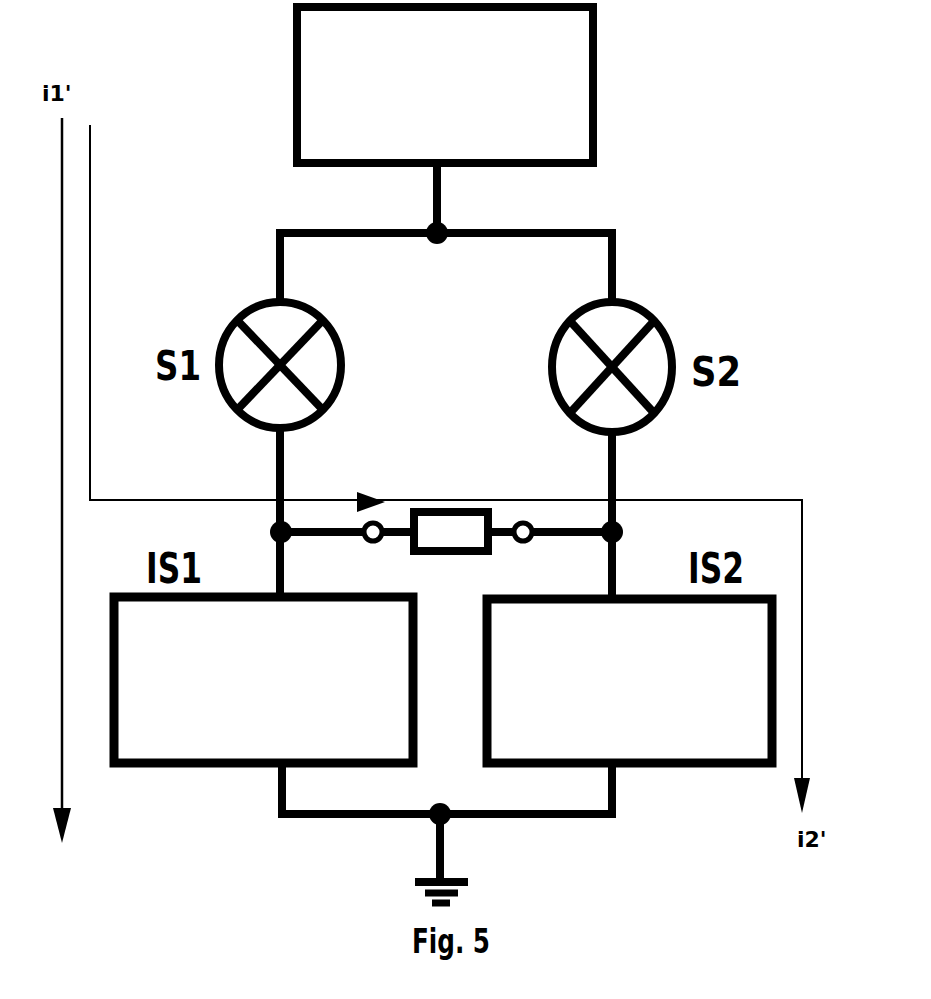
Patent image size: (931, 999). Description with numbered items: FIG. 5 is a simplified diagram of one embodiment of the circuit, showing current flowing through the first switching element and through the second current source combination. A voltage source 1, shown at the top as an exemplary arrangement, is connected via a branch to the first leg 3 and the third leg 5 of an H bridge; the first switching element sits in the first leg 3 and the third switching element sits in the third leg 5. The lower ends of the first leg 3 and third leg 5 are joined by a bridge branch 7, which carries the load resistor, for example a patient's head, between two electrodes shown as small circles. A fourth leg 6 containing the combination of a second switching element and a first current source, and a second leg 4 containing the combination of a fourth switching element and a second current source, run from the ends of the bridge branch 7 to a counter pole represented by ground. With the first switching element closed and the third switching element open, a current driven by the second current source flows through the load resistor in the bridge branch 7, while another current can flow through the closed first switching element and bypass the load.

The voltage source 1 is at (377, 103).
The first leg 3 is at (275, 260).
The second leg 4 is at (615, 585).
The third leg 5 is at (617, 253).
The fourth leg 6 is at (280, 568).
The bridge branch 7 is at (563, 528).